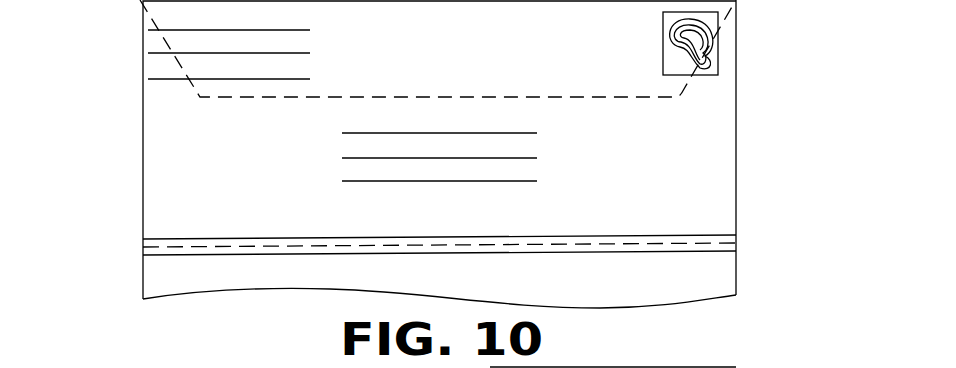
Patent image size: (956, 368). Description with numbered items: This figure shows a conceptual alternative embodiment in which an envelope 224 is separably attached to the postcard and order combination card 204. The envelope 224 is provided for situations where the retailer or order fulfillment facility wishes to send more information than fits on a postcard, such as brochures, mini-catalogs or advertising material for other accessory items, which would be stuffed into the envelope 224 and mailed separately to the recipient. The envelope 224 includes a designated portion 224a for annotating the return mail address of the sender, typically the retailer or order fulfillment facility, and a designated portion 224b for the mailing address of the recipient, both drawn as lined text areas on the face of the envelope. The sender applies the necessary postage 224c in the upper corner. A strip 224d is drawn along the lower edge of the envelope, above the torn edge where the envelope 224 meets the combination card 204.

The postcard and order combination card 204 is at (143, 274).
The envelope 224 is at (143, 123).
The designated portion for return mail address 224a is at (158, 65).
The designated portion for recipient mailing address 224b is at (520, 143).
The postage 224c is at (720, 54).
The sealing strip 224d is at (143, 248).